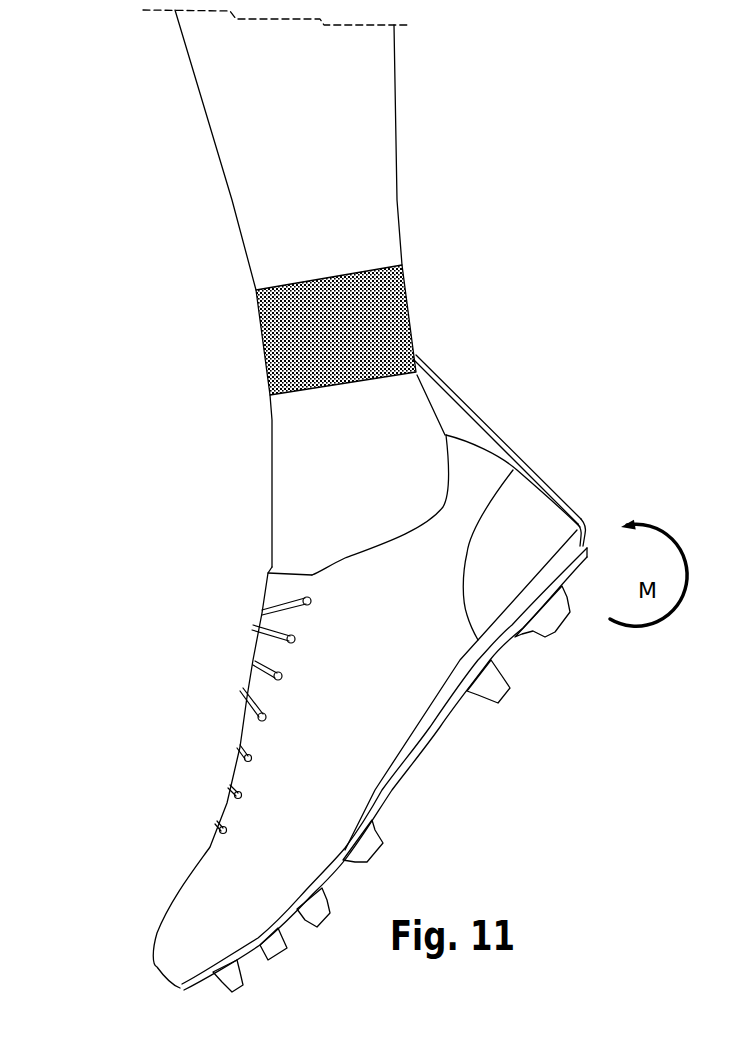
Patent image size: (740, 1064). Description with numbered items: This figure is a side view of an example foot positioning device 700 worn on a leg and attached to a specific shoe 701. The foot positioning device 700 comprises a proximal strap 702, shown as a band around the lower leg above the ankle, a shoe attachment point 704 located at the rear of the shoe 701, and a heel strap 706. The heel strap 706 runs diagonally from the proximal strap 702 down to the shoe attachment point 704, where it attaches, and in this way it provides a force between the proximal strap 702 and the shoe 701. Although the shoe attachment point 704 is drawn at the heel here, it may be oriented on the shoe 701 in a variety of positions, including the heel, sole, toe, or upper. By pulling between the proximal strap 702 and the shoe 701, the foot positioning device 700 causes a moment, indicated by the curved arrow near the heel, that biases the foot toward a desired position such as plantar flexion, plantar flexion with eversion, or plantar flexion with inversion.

The foot positioning device 700 is at (138, 158).
The shoe 701 is at (241, 870).
The proximal strap 702 is at (413, 320).
The shoe attachment point 704 is at (583, 543).
The heel strap 706 is at (486, 422).